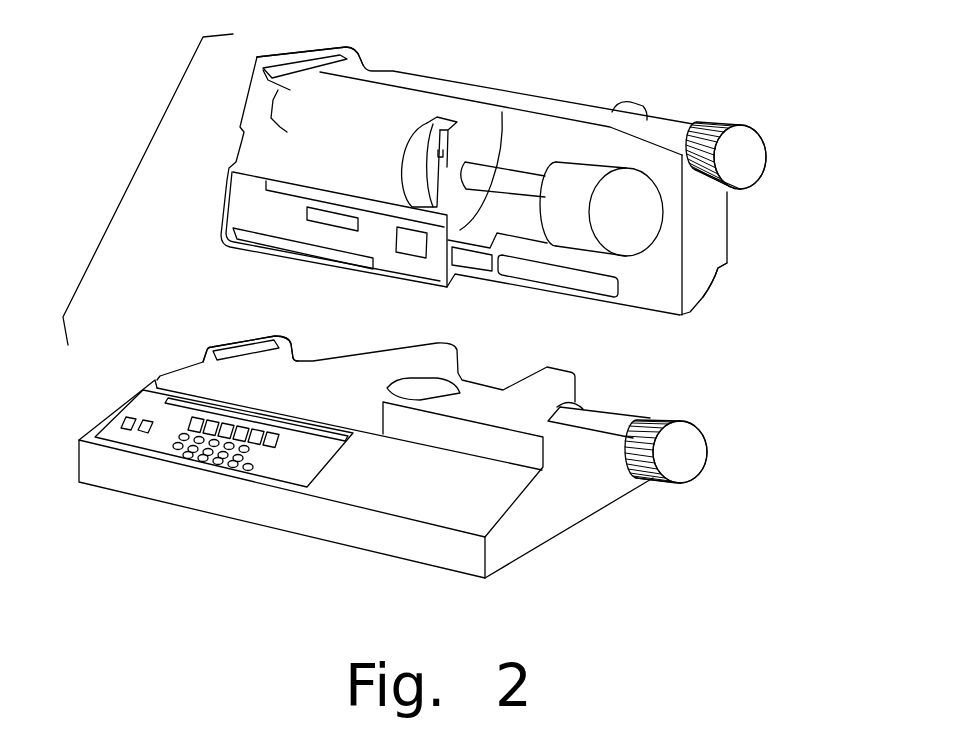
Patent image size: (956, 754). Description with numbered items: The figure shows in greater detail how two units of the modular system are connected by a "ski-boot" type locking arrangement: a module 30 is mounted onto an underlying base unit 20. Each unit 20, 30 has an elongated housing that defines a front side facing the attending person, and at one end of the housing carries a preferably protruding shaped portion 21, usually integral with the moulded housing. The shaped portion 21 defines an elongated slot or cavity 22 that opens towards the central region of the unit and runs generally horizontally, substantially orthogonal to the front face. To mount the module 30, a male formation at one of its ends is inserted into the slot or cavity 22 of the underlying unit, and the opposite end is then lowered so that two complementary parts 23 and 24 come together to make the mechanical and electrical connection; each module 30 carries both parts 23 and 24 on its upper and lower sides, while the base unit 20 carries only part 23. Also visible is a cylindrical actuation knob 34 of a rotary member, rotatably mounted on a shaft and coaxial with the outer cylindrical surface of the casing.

The base unit 20 is at (555, 537).
The shaped portion 21 is at (316, 50).
The slot or cavity 22 is at (361, 57).
The complementary part 23 is at (756, 117).
The complementary part 24 is at (722, 285).
The module 30 is at (715, 229).
The cylindrical actuation knob 34 is at (735, 158).